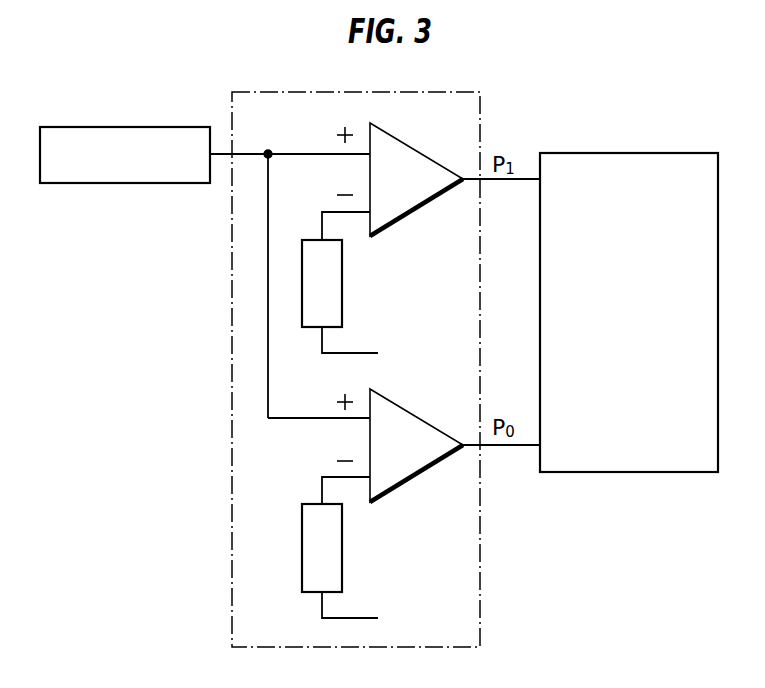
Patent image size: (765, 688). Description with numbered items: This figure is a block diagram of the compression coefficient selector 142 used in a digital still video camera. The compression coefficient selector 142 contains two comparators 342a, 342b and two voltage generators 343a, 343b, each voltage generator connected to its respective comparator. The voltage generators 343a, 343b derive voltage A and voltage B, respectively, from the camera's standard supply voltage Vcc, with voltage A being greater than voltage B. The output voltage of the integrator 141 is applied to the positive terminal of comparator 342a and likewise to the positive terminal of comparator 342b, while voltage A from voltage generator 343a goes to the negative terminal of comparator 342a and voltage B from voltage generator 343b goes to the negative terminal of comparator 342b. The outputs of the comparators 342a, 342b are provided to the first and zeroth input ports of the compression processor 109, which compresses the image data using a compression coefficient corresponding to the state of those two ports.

The integrator 141 is at (137, 125).
The compression coefficient selector 142 is at (437, 88).
The comparator 342a is at (432, 158).
The comparator 342b is at (432, 423).
The voltage generator 343a is at (370, 278).
The voltage generator 343b is at (342, 557).
The compression processor 109 is at (637, 150).